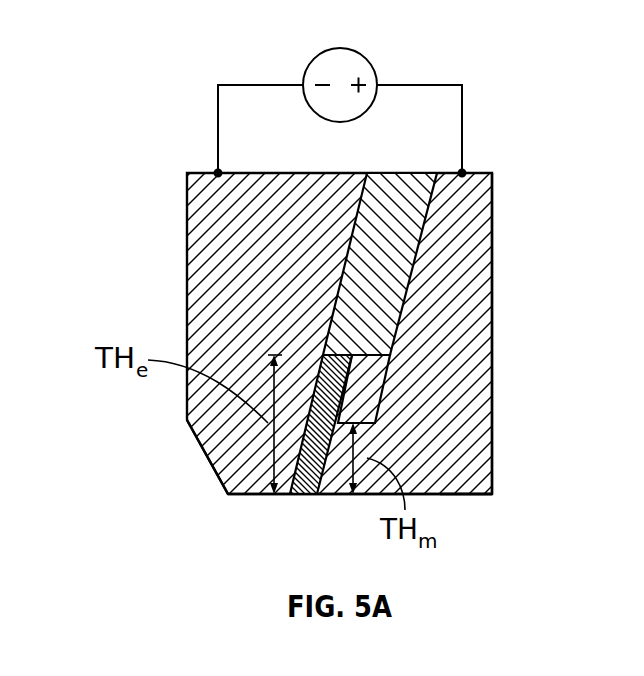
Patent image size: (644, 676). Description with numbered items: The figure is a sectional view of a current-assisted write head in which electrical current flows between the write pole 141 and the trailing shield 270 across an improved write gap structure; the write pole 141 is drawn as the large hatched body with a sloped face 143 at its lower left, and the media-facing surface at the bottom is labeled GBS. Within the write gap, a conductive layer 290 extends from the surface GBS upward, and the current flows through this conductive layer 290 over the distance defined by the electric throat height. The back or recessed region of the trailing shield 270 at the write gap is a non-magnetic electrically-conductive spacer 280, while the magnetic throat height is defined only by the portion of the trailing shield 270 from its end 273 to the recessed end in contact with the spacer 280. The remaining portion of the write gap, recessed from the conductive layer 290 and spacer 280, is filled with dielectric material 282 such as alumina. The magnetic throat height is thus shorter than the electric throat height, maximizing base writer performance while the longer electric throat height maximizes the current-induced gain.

The write pole 141 is at (202, 250).
The chamfered leading edge 143 is at (235, 497).
The trailing shield 270 is at (475, 323).
The end of trailing shield 273 is at (432, 494).
The non-magnetic electrically-conductive spacer 280 is at (358, 382).
The dielectric material 282 is at (383, 292).
The conductive layer 290 is at (302, 495).
The gas bearing surface GBS is at (473, 494).